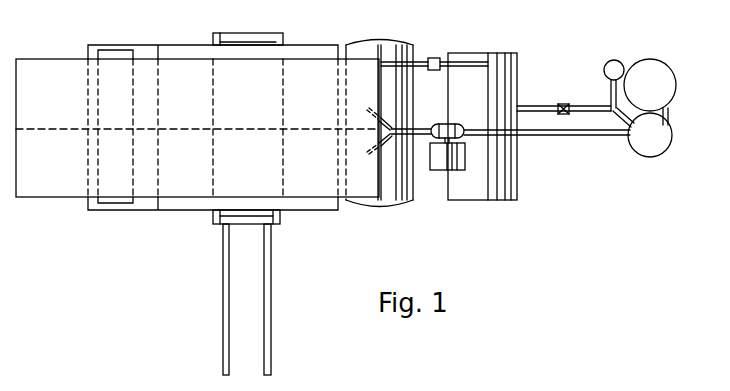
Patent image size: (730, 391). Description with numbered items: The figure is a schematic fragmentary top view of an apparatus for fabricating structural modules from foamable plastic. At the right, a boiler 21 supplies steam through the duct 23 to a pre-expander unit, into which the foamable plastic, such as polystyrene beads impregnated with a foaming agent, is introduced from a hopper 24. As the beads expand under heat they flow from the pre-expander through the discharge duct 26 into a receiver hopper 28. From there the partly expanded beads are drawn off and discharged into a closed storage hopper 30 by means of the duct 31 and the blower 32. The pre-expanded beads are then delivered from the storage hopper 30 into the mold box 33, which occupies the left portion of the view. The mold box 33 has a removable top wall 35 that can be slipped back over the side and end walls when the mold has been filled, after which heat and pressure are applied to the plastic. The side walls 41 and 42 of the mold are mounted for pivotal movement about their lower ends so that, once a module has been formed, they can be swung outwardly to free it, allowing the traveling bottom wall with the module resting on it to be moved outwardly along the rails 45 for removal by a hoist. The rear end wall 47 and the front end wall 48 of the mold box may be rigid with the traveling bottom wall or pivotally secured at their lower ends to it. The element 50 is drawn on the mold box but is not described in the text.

The boiler 21 is at (494, 60).
The duct 23 is at (667, 74).
The hopper 24 is at (608, 65).
The discharge duct 26 is at (670, 115).
The receiver hopper 28 is at (665, 142).
The closed storage hopper 30 is at (60, 189).
The duct 31 is at (567, 137).
The blower 32 is at (448, 124).
The mold box 33 is at (284, 36).
The removable top wall 35 is at (238, 30).
The side wall 41 is at (211, 216).
The side wall 42 is at (284, 217).
The rails 45 is at (264, 312).
The rear end wall 47 is at (250, 42).
The front end wall 48 is at (248, 222).
The guide member 50 is at (122, 51).